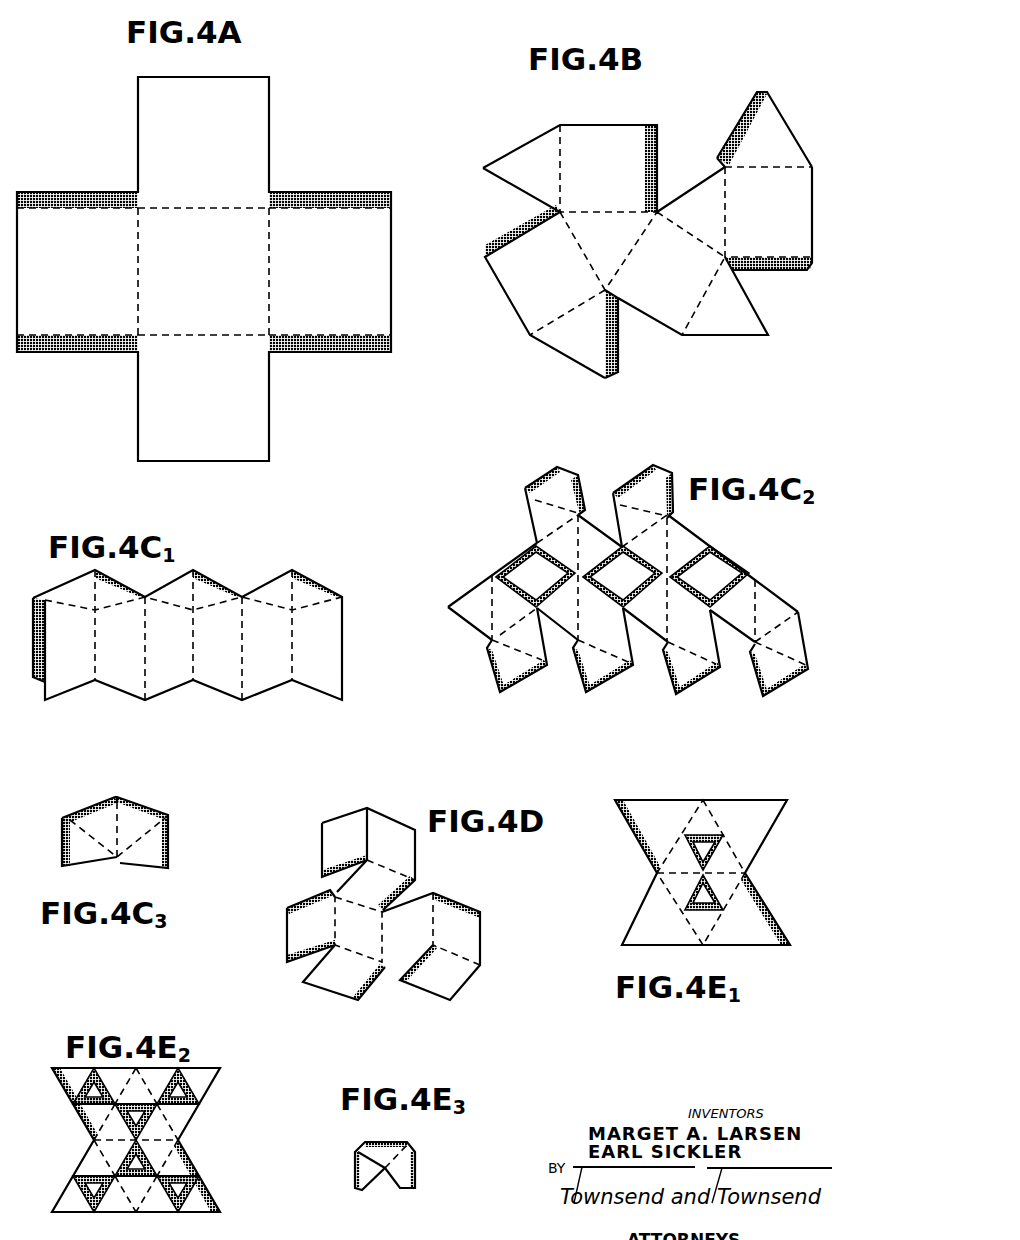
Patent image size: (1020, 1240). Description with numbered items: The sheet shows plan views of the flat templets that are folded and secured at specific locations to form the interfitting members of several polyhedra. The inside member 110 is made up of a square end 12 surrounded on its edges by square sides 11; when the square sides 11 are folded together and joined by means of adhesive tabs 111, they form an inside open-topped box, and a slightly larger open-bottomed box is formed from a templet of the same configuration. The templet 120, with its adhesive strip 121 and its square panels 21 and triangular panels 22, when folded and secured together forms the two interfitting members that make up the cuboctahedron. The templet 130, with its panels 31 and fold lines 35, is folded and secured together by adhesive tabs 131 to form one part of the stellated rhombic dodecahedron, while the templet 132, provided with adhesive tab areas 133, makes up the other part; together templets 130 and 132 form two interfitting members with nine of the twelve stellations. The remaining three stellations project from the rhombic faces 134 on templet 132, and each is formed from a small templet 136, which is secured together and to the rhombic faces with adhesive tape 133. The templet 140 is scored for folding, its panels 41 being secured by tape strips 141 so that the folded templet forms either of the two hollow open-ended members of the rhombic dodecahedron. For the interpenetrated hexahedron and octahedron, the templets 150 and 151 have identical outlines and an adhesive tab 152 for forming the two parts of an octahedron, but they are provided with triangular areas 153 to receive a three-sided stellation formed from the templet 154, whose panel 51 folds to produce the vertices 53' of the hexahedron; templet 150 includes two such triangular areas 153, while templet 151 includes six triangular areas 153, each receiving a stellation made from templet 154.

In FIG. 4A, the inside member 110 is at (204, 269).
In FIG. 4A, the adhesive tabs 111 is at (326, 348).
In FIG. 4A, the square sides 11 is at (314, 297).
In FIG. 4A, the square end 12 is at (212, 297).
In FIG. 4B, the templet 120 is at (647, 211).
In FIG. 4B, the adhesive strip 121 is at (618, 342).
In FIG. 4B, the square panel 21 is at (606, 185).
In FIG. 4B, the triangular panel 22 is at (516, 183).
In FIG. 4C1, the templet 130 is at (190, 633).
In FIG. 4C1, the adhesive tabs 131 is at (322, 582).
In FIG. 4C1, the panel 31 is at (108, 592).
In FIG. 4C2, the panel 31 is at (582, 627).
In FIG. 4C3, the panel 31 is at (120, 840).
In FIG. 4C1, the fold line 35 is at (113, 667).
In FIG. 4C2, the templet 132 is at (628, 564).
In FIG. 4C2, the adhesive tabs 133 is at (661, 478).
In FIG. 4C3, the adhesive tabs 133 is at (172, 838).
In FIG. 4C2, the rhombic faces 134 is at (538, 575).
In FIG. 4C3, the templet 136 is at (145, 815).
In FIG. 4D, the templet 140 is at (413, 904).
In FIG. 4D, the tape strips 141 is at (467, 902).
In FIG. 4D, the panel 41 is at (335, 970).
In FIG. 4E1, the templet 150 is at (713, 869).
In FIG. 4E1, the adhesive tab 152 is at (767, 894).
In FIG. 4E2, the adhesive tab 152 is at (202, 1163).
In FIG. 4E1, the triangular areas 153 is at (707, 896).
In FIG. 4E2, the triangular areas 153 is at (137, 1115).
In FIG. 4E2, the templet 151 is at (147, 1126).
In FIG. 4E3, the templet 154 is at (396, 1159).
In FIG. 4E3, the panel 51 is at (398, 1170).
In FIG. 4E3, the vertices 53' is at (364, 1156).